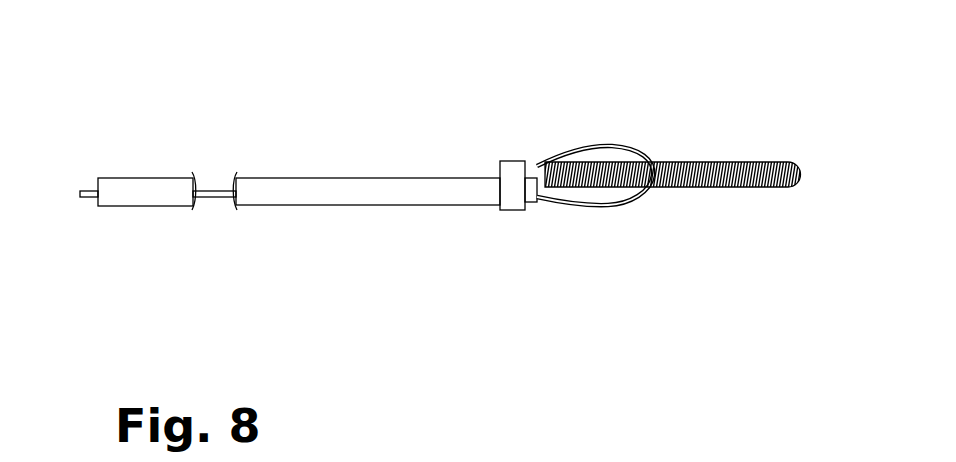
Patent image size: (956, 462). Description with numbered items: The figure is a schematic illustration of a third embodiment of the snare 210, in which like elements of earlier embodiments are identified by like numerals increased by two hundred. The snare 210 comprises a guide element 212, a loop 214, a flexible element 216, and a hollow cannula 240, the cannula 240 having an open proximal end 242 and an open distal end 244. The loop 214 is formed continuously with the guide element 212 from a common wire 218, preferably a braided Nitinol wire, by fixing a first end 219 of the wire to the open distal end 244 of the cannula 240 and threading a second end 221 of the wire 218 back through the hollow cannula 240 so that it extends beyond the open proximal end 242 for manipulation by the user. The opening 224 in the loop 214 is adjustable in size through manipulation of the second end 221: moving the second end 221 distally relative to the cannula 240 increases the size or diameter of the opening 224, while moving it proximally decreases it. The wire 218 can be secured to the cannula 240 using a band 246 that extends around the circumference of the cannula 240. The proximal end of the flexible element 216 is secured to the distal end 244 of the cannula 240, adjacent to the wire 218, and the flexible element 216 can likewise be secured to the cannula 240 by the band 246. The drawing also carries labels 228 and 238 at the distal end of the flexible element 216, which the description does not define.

The snare 210 is at (785, 53).
The guide element 212 is at (210, 184).
The loop 214 is at (613, 217).
The flexible element 216 is at (731, 195).
The wire 218 is at (606, 147).
The first end 219 is at (528, 162).
The second end 221 is at (83, 198).
The opening 224 is at (599, 191).
The distal tip 228 is at (770, 162).
The distal end 238 is at (803, 170).
The hollow cannula 240 is at (337, 213).
The open proximal end 242 is at (97, 178).
The open distal end 244 is at (527, 211).
The band 246 is at (505, 161).